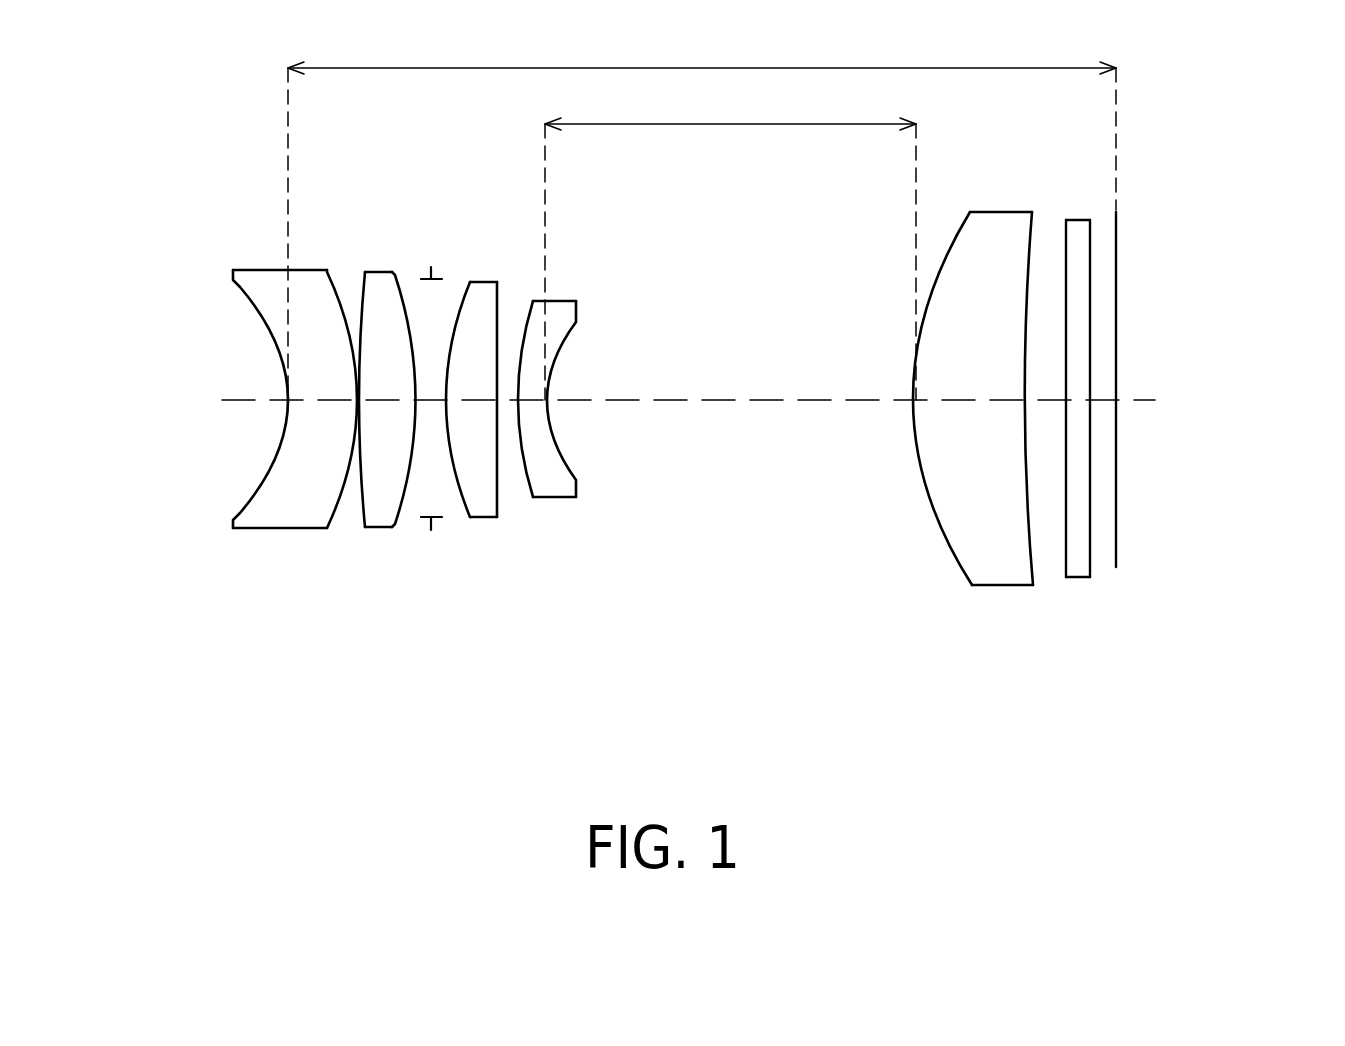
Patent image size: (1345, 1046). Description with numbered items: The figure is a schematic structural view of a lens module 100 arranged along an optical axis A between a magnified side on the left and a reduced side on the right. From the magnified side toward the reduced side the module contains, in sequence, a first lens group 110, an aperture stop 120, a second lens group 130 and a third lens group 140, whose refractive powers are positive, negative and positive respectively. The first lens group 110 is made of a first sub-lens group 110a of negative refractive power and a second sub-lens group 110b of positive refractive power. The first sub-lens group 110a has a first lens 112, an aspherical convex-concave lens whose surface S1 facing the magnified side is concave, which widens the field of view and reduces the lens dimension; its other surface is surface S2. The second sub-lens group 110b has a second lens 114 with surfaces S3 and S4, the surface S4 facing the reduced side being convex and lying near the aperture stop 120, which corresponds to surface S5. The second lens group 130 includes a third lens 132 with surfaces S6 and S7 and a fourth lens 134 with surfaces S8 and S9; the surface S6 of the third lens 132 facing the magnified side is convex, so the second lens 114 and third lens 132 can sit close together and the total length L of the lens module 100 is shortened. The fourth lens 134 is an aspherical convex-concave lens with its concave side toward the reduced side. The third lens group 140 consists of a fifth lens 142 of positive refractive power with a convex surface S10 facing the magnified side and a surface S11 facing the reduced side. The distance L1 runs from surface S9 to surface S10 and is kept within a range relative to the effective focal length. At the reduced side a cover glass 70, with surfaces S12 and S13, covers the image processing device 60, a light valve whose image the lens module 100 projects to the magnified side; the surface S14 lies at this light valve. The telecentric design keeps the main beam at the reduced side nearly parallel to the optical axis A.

The lens module 100 is at (1178, 797).
The first lens group 110 is at (415, 672).
The first sub-lens group 110a is at (325, 625).
The second sub-lens group 110b is at (415, 625).
The first lens 112 is at (290, 520).
The second lens 114 is at (377, 522).
The aperture stop 120 is at (433, 530).
The second lens group 130 is at (670, 625).
The third lens 132 is at (487, 520).
The fourth lens 134 is at (560, 500).
The third lens group 140 is at (1040, 665).
The fifth lens 142 is at (992, 572).
The cover glass 70 is at (1080, 570).
The image processing device 60 is at (1118, 517).
The surface S1 is at (238, 304).
The surface S2 is at (320, 290).
The surface S3 is at (359, 279).
The surface S4 is at (402, 271).
The surface S5 is at (442, 271).
The surface S6 is at (470, 330).
The surface S7 is at (509, 303).
The surface S8 is at (540, 333).
The surface S9 is at (578, 343).
The surface S10 is at (953, 213).
The surface S11 is at (1046, 236).
The surface S12 is at (1073, 248).
The surface S13 is at (1099, 258).
The surface S14 is at (1126, 335).
The total length L is at (702, 212).
The distance from surface S9 to surface S10 L1 is at (730, 240).
The optical axis A is at (740, 398).